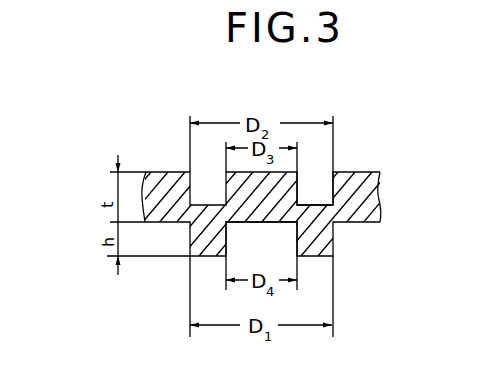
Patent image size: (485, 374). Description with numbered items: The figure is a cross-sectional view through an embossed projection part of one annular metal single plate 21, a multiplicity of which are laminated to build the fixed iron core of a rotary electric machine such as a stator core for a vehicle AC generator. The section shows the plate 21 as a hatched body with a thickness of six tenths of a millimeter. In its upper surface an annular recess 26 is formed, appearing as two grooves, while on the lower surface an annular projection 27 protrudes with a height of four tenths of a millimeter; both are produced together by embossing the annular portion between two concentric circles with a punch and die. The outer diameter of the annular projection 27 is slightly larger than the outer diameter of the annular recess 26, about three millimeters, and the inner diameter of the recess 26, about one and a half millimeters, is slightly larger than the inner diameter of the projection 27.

The metal single plate 21 is at (375, 190).
The annular recess 26 is at (313, 204).
The annular projection 27 is at (312, 257).